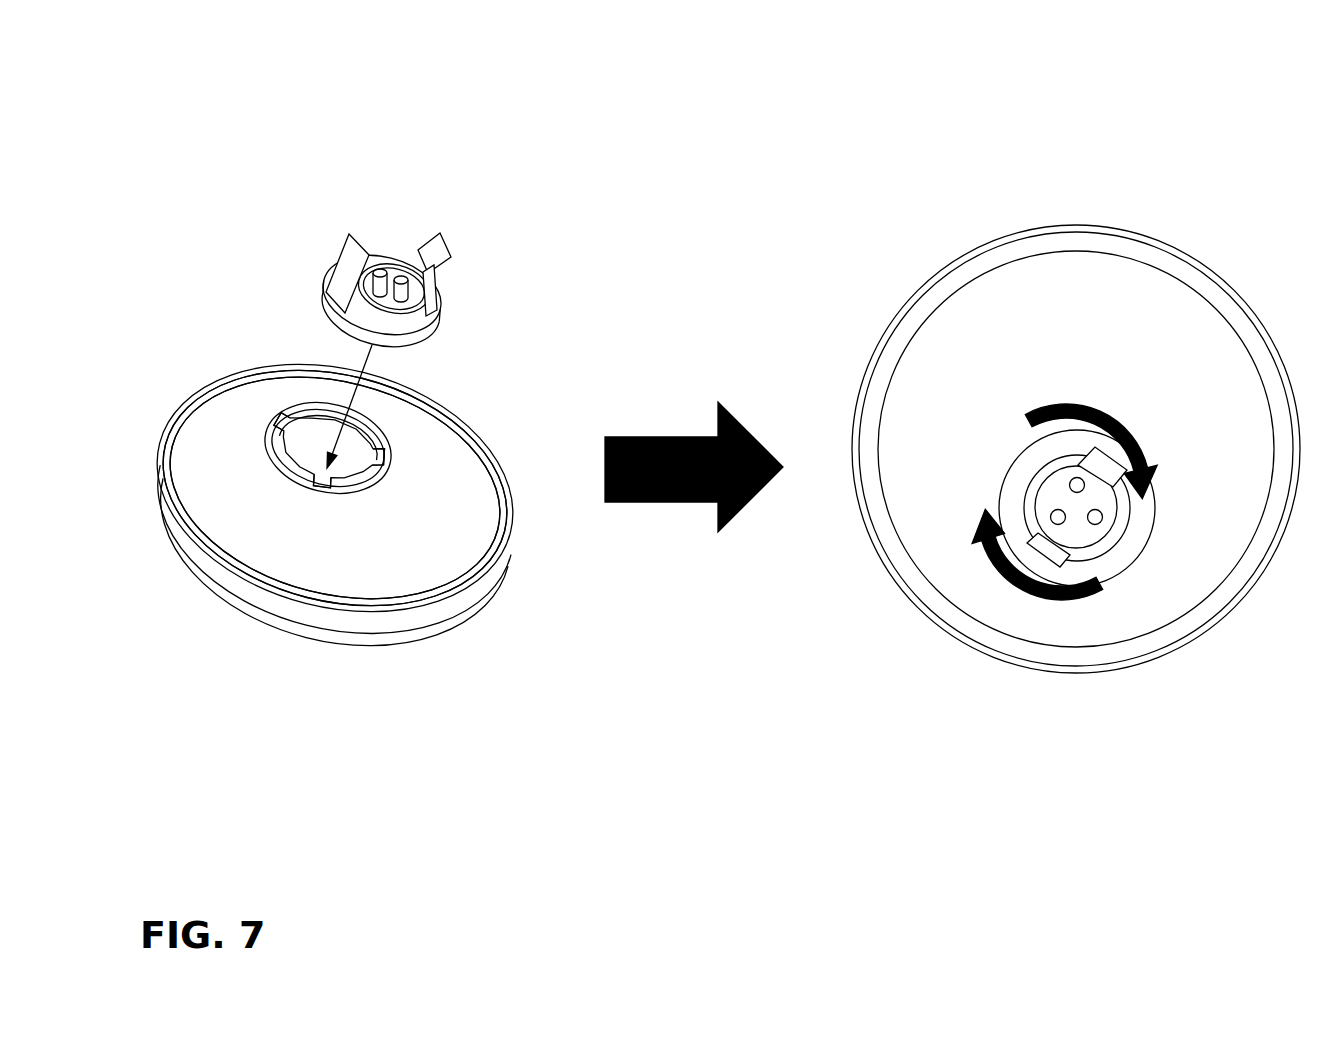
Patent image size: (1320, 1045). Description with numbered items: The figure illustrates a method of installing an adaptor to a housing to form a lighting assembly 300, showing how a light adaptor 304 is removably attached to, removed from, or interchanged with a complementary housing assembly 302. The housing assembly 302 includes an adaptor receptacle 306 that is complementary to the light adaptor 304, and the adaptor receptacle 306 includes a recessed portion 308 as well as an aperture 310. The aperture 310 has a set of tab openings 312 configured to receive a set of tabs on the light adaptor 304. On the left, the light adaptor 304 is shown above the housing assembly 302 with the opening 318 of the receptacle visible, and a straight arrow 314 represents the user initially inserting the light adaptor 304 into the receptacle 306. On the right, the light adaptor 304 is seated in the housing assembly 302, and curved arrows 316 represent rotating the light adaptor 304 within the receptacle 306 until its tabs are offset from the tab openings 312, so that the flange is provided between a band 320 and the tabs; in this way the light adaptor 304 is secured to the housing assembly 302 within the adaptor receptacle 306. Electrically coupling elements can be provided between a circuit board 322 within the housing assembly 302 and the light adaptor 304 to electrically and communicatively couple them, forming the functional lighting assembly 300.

The lighting assembly 300 is at (223, 58).
The housing assembly 302 is at (152, 472).
The light adaptor 304 is at (802, 409).
The adaptor receptacle 306 is at (297, 428).
The recessed portion 308 is at (380, 472).
The aperture 310 is at (305, 458).
The tab openings 312 is at (370, 432).
The arrow 314 is at (365, 480).
The arrows 316 is at (1070, 403).
The opening 318 is at (338, 425).
The band 320 is at (441, 307).
The circuit board 322 is at (297, 455).